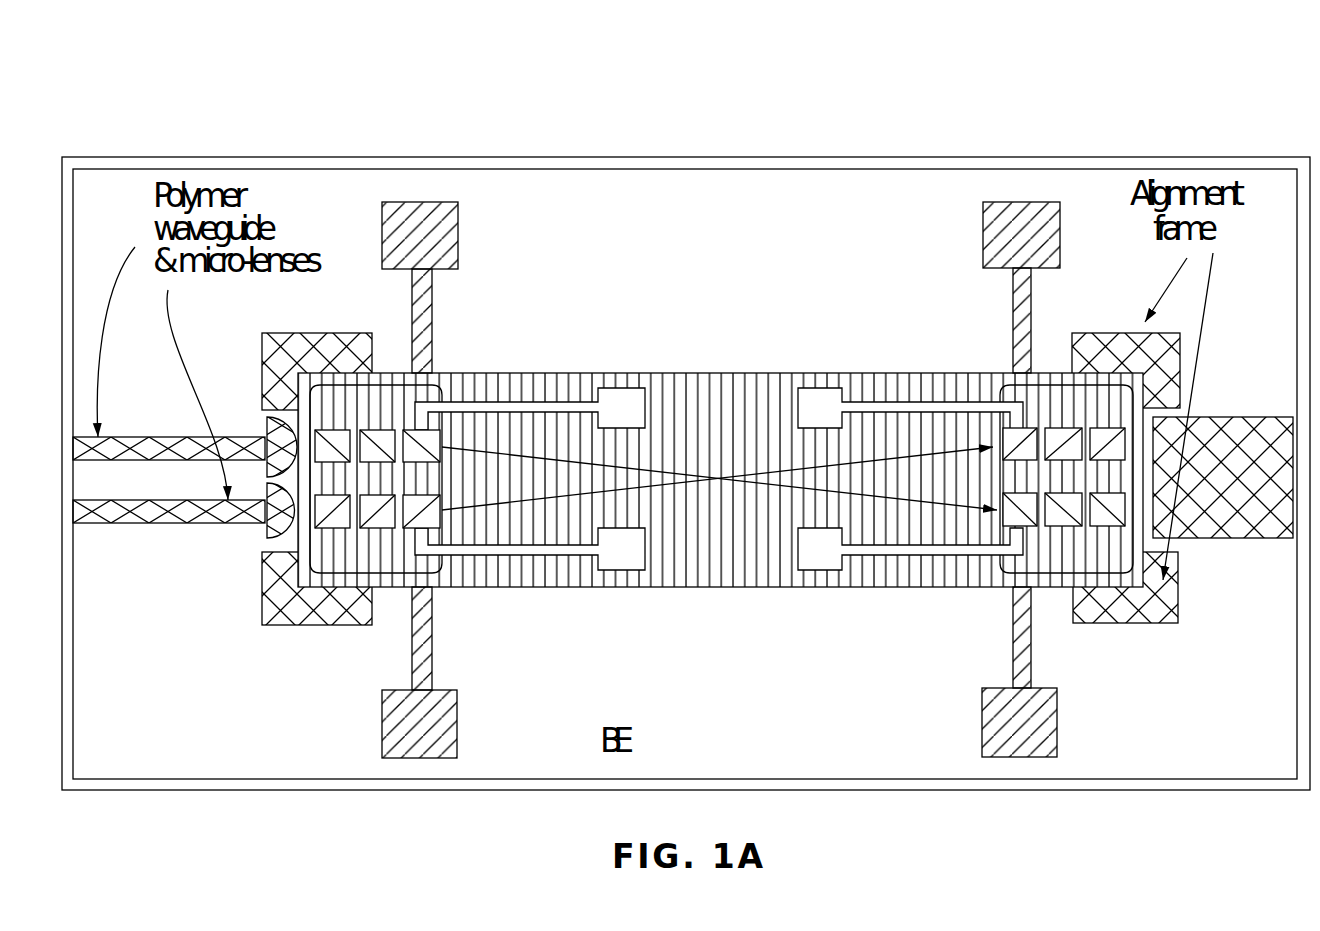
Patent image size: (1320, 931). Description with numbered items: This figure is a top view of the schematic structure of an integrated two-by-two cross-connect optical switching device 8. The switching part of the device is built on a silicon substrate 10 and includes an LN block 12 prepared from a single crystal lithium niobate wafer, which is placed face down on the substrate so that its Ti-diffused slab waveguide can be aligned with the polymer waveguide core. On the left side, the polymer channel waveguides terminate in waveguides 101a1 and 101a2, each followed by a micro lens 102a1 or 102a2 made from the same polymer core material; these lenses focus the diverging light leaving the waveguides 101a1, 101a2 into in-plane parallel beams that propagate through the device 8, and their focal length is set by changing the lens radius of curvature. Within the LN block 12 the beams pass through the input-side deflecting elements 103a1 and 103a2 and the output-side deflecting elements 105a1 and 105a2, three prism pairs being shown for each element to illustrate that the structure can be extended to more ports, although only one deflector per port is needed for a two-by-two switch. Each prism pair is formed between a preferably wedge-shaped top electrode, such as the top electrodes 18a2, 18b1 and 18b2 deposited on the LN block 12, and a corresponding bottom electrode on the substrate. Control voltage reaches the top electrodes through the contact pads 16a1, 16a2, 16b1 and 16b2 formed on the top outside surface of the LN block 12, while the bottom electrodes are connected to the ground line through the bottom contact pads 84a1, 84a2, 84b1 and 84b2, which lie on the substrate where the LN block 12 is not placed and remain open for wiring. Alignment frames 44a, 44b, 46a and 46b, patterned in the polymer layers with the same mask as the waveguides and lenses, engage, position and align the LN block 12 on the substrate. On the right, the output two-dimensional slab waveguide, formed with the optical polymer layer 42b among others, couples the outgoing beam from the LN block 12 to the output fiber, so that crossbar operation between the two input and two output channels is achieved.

The switching device 8 is at (1122, 98).
The silicon substrate 10 is at (868, 200).
The LN block 12 is at (488, 367).
The contact pad 16a1 is at (632, 405).
The contact pad 16a2 is at (618, 557).
The contact pad 16b1 is at (810, 405).
The contact pad 16b2 is at (823, 557).
The top electrode 18a2 is at (420, 450).
The top electrode 18b1 is at (1017, 450).
The top electrode 18b2 is at (998, 520).
The optical polymer layer 42b is at (1235, 417).
The alignment frame 44a is at (1088, 333).
The alignment frame 44b is at (1167, 623).
The alignment frame 46a is at (327, 333).
The alignment frame 46b is at (267, 625).
The bottom contact pad 84a1 is at (460, 215).
The bottom contact pad 84a2 is at (382, 733).
The bottom contact pad 84b1 is at (983, 222).
The bottom contact pad 84b2 is at (1035, 715).
The waveguide 101a1 is at (132, 437).
The waveguide 101a2 is at (213, 525).
The micro lens 102a1 is at (265, 425).
The micro lens 102a2 is at (265, 540).
The deflecting element 103a1 is at (375, 384).
The deflecting element 103a2 is at (374, 588).
The deflecting element 105a1 is at (1065, 385).
The deflecting element 105a2 is at (1070, 575).